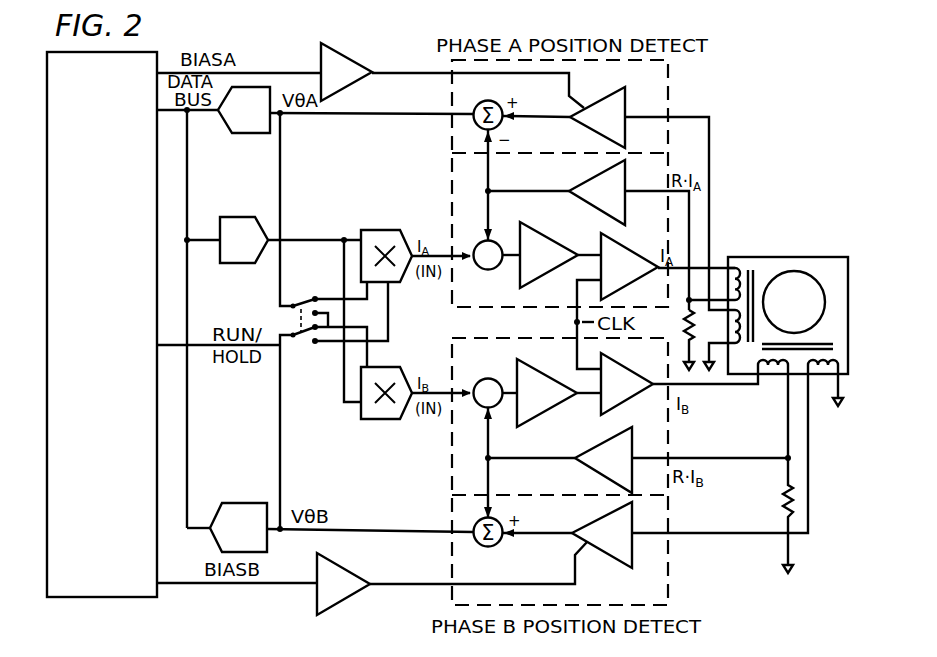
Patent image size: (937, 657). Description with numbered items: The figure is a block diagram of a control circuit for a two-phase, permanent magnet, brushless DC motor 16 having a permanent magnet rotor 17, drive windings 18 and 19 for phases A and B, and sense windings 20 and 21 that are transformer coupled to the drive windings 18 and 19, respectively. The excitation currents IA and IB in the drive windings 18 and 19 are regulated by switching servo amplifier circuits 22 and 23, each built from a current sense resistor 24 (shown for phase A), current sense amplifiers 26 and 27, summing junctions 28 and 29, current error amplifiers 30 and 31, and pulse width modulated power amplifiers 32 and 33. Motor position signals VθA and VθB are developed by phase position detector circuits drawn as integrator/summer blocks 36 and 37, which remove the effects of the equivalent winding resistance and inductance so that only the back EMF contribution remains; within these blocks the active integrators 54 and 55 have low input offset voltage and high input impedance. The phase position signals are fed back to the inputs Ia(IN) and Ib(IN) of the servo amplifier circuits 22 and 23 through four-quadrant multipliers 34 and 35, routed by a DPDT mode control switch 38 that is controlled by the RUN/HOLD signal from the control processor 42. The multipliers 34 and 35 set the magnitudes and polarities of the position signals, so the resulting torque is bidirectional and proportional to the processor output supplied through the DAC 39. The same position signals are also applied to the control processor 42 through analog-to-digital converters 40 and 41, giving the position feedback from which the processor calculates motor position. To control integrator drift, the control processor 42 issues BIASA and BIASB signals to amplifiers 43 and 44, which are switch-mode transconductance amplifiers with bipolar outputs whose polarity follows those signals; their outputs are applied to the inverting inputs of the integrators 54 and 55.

The BLDC motor 16 is at (790, 331).
The permanent magnet rotor 17 is at (822, 294).
The drive winding 18 is at (734, 270).
The drive winding 19 is at (772, 376).
The sense winding 20 is at (720, 326).
The sense winding 21 is at (817, 374).
The switching servo amplifier circuit 22 is at (446, 185).
The switching servo amplifier circuit 23 is at (450, 461).
The current sense resistor 24 is at (685, 324).
The current sense amplifier 26 is at (590, 181).
The current sense amplifier 27 is at (596, 472).
The summing junction 28 is at (479, 262).
The summing junction 29 is at (486, 376).
The current error amplifier 30 is at (537, 211).
The current error amplifier 31 is at (553, 379).
The pulse width modulated power amplifier 32 is at (597, 251).
The pulse width modulated power amplifier 33 is at (602, 412).
The four-quadrant multiplier 34 is at (384, 229).
The four-quadrant multiplier 35 is at (381, 420).
The integrator/summer block 36 is at (672, 99).
The integrator/summer block 37 is at (672, 572).
The DPDT mode control switch 38 is at (286, 324).
The DAC 39 is at (238, 217).
The analog-to-digital converter 40 is at (243, 133).
The analog-to-digital converter 41 is at (245, 502).
The control processor 42 is at (47, 172).
The amplifier 43 is at (347, 54).
The amplifier 44 is at (340, 598).
The active integrator 54 is at (603, 97).
The active integrator 55 is at (605, 557).